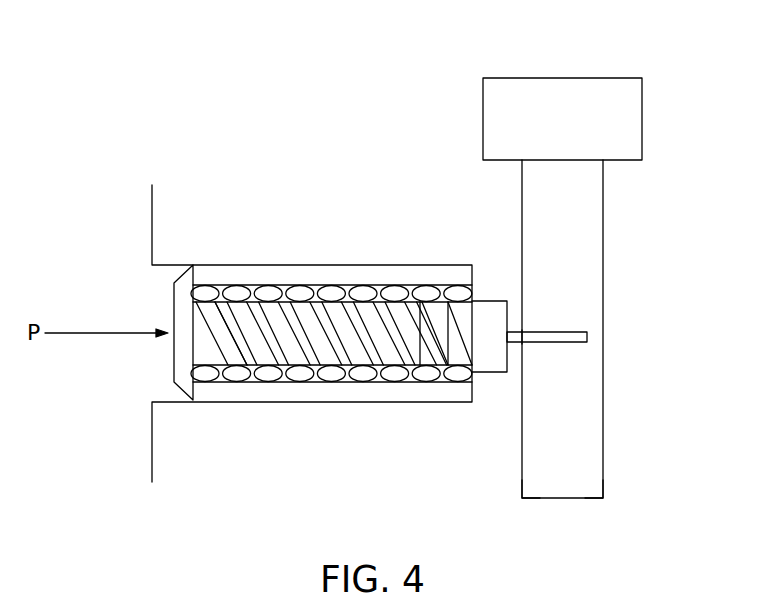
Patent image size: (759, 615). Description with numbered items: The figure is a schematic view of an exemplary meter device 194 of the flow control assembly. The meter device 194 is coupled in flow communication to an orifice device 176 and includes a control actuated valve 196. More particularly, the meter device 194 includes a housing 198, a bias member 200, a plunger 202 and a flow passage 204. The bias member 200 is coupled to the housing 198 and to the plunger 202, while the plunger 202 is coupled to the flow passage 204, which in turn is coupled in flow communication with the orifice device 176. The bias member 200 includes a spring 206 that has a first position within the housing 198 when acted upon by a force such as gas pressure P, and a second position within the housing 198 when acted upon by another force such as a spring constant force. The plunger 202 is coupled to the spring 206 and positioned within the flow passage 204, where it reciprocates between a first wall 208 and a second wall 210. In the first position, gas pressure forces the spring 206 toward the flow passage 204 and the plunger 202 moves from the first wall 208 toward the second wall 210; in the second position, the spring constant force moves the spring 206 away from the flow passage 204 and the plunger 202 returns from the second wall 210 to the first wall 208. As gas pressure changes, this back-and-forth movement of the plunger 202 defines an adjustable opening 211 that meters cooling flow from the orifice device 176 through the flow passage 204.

The orifice device 176 is at (562, 78).
The meter device 194 is at (269, 250).
The control actuated valve 196 is at (497, 300).
The housing 198 is at (193, 266).
The bias member 200 is at (147, 287).
The plunger 202 is at (545, 344).
The flow passage 204 is at (565, 193).
The spring 206 is at (232, 356).
The first wall 208 is at (522, 476).
The second wall 210 is at (603, 476).
The adjustable opening 211 is at (595, 333).